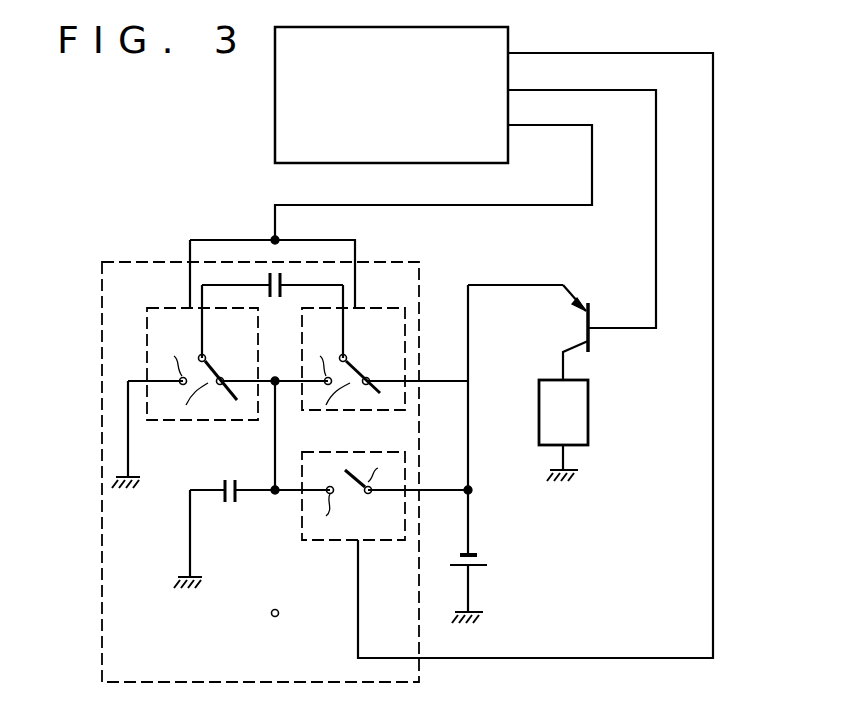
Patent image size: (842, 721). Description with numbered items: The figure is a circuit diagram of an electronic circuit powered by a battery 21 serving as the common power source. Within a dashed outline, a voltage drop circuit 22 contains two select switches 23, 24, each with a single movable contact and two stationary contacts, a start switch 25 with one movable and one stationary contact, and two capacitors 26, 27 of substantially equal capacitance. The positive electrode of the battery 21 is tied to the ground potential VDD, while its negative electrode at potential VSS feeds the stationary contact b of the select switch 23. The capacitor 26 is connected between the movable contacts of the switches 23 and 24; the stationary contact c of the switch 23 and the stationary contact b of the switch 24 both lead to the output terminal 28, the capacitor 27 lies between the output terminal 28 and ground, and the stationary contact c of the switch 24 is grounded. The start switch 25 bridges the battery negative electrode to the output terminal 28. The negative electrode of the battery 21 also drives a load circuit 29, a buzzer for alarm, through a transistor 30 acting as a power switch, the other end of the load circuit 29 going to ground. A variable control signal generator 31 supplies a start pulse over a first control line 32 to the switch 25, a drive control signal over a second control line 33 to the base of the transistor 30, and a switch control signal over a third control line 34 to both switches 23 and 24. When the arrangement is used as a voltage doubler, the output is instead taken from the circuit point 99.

The battery 21 is at (482, 563).
The voltage drop circuit 22 is at (398, 675).
The select switch 23 is at (380, 320).
The select switch 24 is at (168, 306).
The start switch 25 is at (352, 452).
The capacitor 26 is at (273, 298).
The capacitor 27 is at (229, 478).
The output terminal 28 is at (270, 617).
The load circuit 29 is at (588, 421).
The transistor 30 is at (594, 338).
The variable control signal generator 31 is at (508, 43).
The first control line 32 is at (664, 55).
The second control line 33 is at (608, 92).
The third control line 34 is at (571, 105).
The circuit point 99 is at (473, 490).